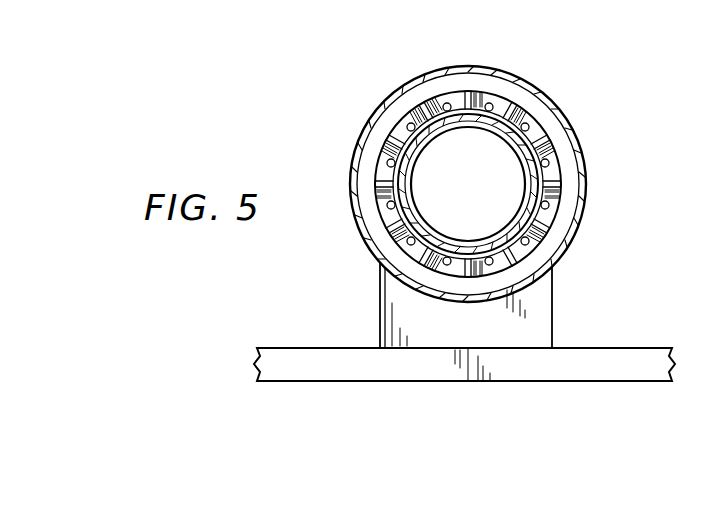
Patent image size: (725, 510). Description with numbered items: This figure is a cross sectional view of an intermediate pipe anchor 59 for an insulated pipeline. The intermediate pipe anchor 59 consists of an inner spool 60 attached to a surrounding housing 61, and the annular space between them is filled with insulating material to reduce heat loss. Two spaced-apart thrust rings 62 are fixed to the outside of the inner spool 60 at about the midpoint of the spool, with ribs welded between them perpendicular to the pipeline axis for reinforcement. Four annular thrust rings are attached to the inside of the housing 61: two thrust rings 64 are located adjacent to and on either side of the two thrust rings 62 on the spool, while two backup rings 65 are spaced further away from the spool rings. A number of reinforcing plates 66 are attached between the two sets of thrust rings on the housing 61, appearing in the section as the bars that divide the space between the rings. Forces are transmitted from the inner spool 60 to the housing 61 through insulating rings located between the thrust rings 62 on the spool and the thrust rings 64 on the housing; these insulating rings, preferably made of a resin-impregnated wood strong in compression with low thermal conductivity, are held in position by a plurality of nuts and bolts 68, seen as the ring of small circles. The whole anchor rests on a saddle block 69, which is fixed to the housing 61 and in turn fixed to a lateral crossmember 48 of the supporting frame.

The lateral crossmember 48 is at (638, 382).
The intermediate pipe anchor 59 is at (586, 185).
The inner spool 60 is at (496, 134).
The housing 61 is at (562, 112).
The thrust rings 62 is at (578, 204).
The thrust rings 64 is at (383, 156).
The backup rings 65 is at (510, 98).
The reinforcing plates 66 is at (456, 94).
The nuts and bolts 68 is at (405, 124).
The saddle block 69 is at (553, 313).